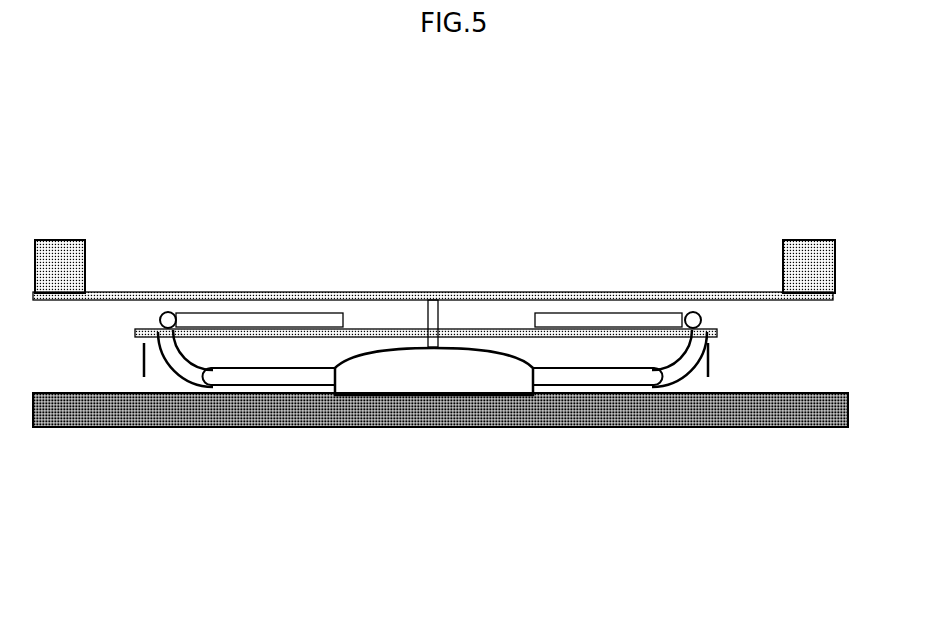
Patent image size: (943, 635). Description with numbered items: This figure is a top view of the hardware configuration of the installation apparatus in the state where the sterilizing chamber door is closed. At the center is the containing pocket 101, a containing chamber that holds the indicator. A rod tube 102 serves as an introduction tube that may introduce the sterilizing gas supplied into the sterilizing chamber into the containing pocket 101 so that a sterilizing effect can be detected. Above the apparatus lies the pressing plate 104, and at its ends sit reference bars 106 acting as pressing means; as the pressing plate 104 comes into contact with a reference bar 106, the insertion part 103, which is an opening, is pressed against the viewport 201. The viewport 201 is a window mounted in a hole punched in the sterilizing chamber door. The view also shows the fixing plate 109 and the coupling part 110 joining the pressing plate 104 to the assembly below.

The containing pocket 101 is at (504, 381).
The rod tube 102 is at (647, 320).
The insertion part 103 is at (428, 406).
The pressing plate 104 is at (343, 283).
The reference bar 106 is at (58, 252).
The fixing plate 109 is at (284, 349).
The coupling part 110 is at (436, 312).
The viewport 201 is at (722, 439).